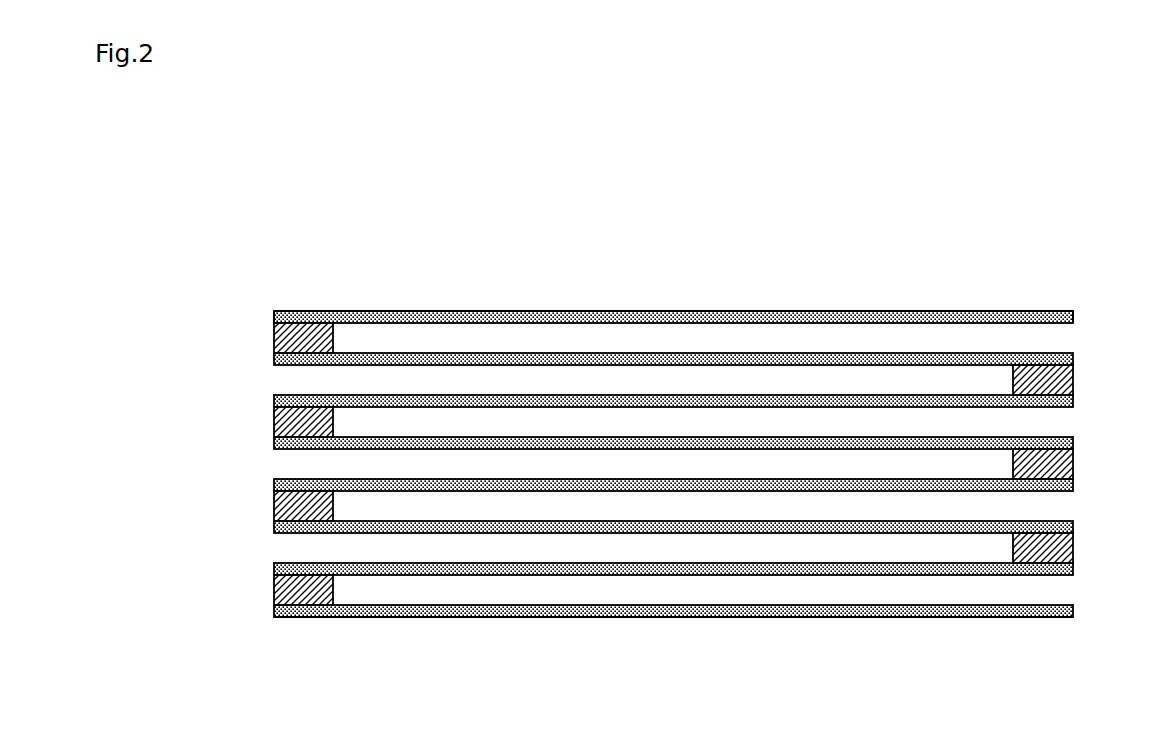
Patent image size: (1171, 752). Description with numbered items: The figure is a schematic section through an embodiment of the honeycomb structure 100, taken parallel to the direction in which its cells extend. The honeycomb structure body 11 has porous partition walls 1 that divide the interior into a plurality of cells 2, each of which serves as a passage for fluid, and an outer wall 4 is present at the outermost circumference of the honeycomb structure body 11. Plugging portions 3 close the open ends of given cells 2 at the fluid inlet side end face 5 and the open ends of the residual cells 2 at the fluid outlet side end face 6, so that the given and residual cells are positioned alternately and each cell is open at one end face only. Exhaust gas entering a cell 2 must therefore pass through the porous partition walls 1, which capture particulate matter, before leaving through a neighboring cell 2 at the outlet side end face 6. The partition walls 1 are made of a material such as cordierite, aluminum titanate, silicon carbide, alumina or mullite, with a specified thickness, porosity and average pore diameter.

The honeycomb structure 100 is at (1082, 180).
The partition wall 1 is at (432, 311).
The cell 2 is at (333, 382).
The plugging portion 3 is at (1074, 381).
The outer wall 4 is at (778, 310).
The fluid inlet side end face 5 is at (273, 313).
The fluid outlet side end face 6 is at (1074, 314).
The honeycomb structure body 11 is at (812, 619).